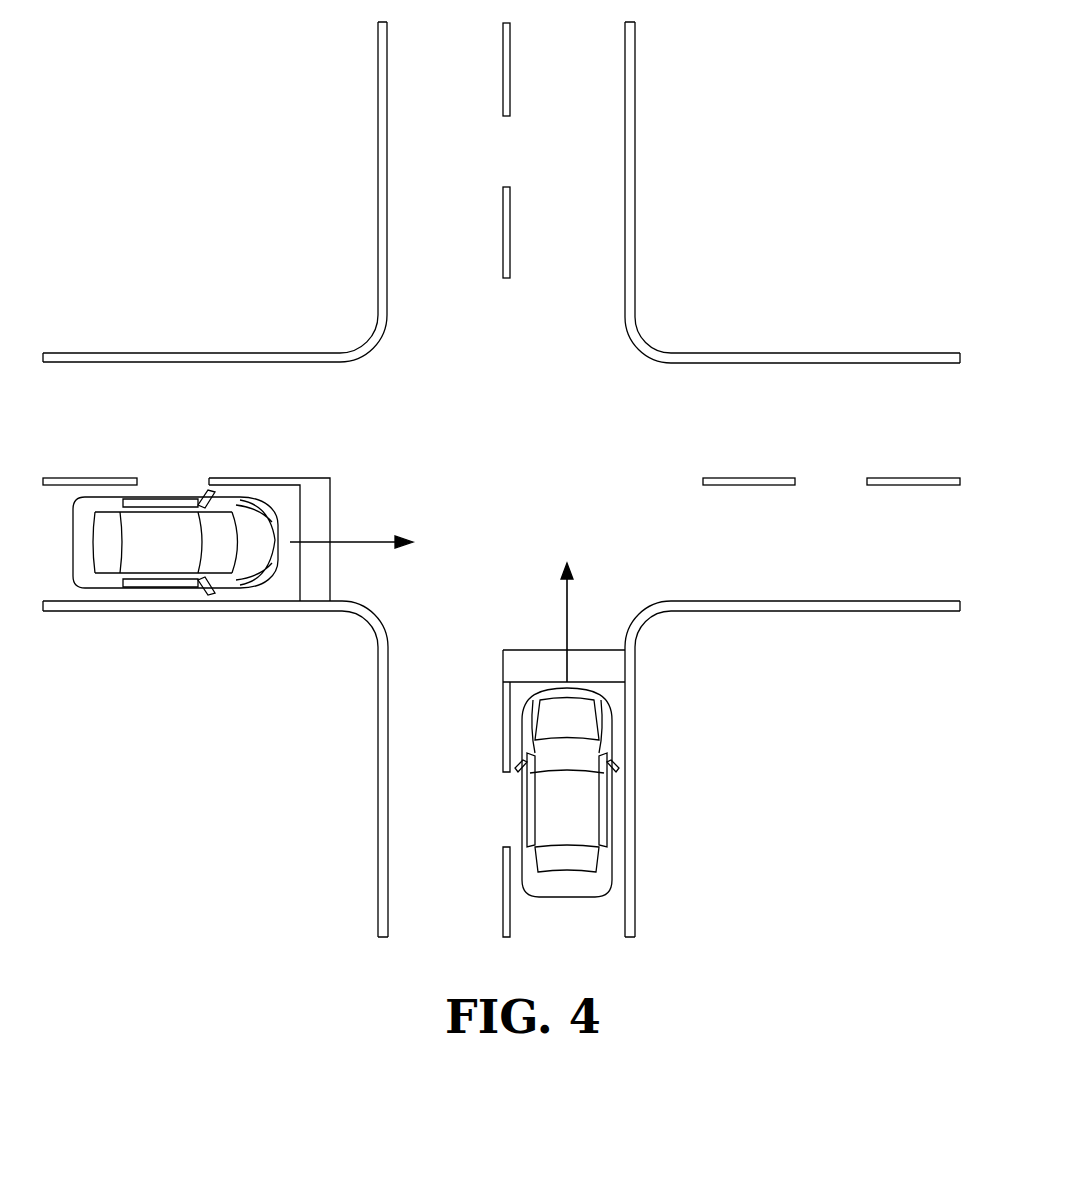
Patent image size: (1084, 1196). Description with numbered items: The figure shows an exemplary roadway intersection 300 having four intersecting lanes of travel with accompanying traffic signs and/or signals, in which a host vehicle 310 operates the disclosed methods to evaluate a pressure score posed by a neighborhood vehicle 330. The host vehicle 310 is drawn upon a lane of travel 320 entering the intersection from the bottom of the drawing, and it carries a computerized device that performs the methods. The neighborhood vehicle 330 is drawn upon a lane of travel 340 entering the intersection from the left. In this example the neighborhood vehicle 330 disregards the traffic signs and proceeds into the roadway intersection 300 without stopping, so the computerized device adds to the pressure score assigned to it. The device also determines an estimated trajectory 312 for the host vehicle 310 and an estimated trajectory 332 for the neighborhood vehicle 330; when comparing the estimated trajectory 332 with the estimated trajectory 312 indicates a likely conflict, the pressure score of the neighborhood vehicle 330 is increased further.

The roadway intersection 300 is at (567, 210).
The host vehicle 310 is at (583, 790).
The estimated trajectory of the host vehicle 312 is at (570, 600).
The lane of travel 320 is at (615, 695).
The neighborhood vehicle 330 is at (152, 557).
The estimated trajectory of the neighborhood vehicle 332 is at (358, 540).
The lane of travel 340 is at (283, 588).